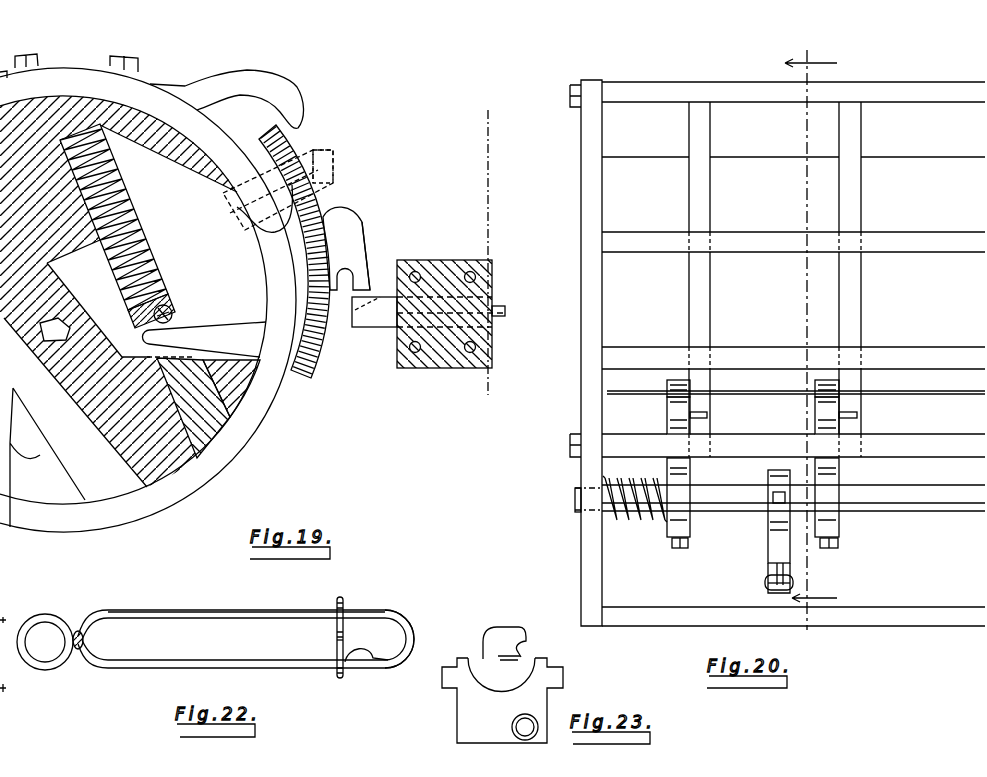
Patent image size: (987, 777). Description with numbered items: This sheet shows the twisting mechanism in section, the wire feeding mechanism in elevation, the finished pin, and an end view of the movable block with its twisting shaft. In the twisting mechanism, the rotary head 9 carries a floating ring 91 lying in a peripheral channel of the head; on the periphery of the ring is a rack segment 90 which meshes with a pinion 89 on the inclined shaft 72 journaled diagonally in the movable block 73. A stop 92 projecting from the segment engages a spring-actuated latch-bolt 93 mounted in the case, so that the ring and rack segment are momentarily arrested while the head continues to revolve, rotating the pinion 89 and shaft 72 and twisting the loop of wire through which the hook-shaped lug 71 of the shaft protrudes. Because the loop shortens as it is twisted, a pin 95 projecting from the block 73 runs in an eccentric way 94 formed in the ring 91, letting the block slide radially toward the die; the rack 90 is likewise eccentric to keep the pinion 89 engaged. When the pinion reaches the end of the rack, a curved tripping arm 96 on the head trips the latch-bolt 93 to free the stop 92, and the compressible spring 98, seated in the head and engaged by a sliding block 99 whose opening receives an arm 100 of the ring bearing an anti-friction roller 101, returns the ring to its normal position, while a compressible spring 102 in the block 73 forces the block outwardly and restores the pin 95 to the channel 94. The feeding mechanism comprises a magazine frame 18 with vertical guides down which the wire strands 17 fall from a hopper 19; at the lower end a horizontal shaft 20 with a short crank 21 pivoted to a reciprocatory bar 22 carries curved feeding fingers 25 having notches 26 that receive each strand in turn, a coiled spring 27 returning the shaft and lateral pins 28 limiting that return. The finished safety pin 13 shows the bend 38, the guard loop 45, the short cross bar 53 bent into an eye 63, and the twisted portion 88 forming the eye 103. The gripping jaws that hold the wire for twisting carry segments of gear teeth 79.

In FIG. 19, the head 9 is at (160, 475).
In FIG. 22, the safety pin 13 is at (246, 626).
In FIG. 20, the wire strands 17 is at (748, 396).
In FIG. 22, the wire strands 17 is at (274, 610).
In FIG. 20, the frame 18 is at (568, 295).
In FIG. 20, the hopper 19 is at (793, 354).
In FIG. 20, the horizontal shaft 20 is at (740, 500).
In FIG. 20, the crank 21 is at (786, 550).
In FIG. 20, the reciprocatory bar 22 is at (766, 586).
In FIG. 20, the feeding fingers 25 is at (667, 410).
In FIG. 20, the notches 26 is at (667, 388).
In FIG. 20, the coiled spring 27 is at (640, 525).
In FIG. 20, the lateral pins 28 is at (870, 414).
In FIG. 22, the bend 38 is at (358, 654).
In FIG. 22, the guard loop 45 is at (408, 622).
In FIG. 22, the short end 53 is at (337, 640).
In FIG. 22, the eye 63 is at (341, 600).
In FIG. 23, the hook-shaped lug 71 is at (511, 627).
In FIG. 19, the inclined shaft 72 is at (334, 166).
In FIG. 23, the inclined shaft 72 is at (523, 657).
In FIG. 23, the movable block 73 is at (457, 710).
In FIG. 19, the gear teeth 79 is at (354, 305).
In FIG. 22, the twisted loop 88 is at (82, 630).
In FIG. 19, the pinion 89 is at (296, 145).
In FIG. 19, the rack segment 90 is at (345, 222).
In FIG. 19, the floating ring 91 is at (268, 410).
In FIG. 19, the stop 92 is at (368, 250).
In FIG. 19, the latch-bolt 93 is at (381, 318).
In FIG. 19, the eccentric way 94 is at (266, 256).
In FIG. 19, the pin 95 is at (225, 193).
In FIG. 19, the tripping arm 96 is at (291, 94).
In FIG. 19, the compressible spring 98 is at (112, 258).
In FIG. 19, the sliding block 99 is at (200, 433).
In FIG. 19, the arm 100 is at (217, 328).
In FIG. 19, the anti-friction roller 101 is at (172, 306).
In FIG. 23, the compressible spring 102 is at (512, 725).
In FIG. 22, the eye 103 is at (47, 614).